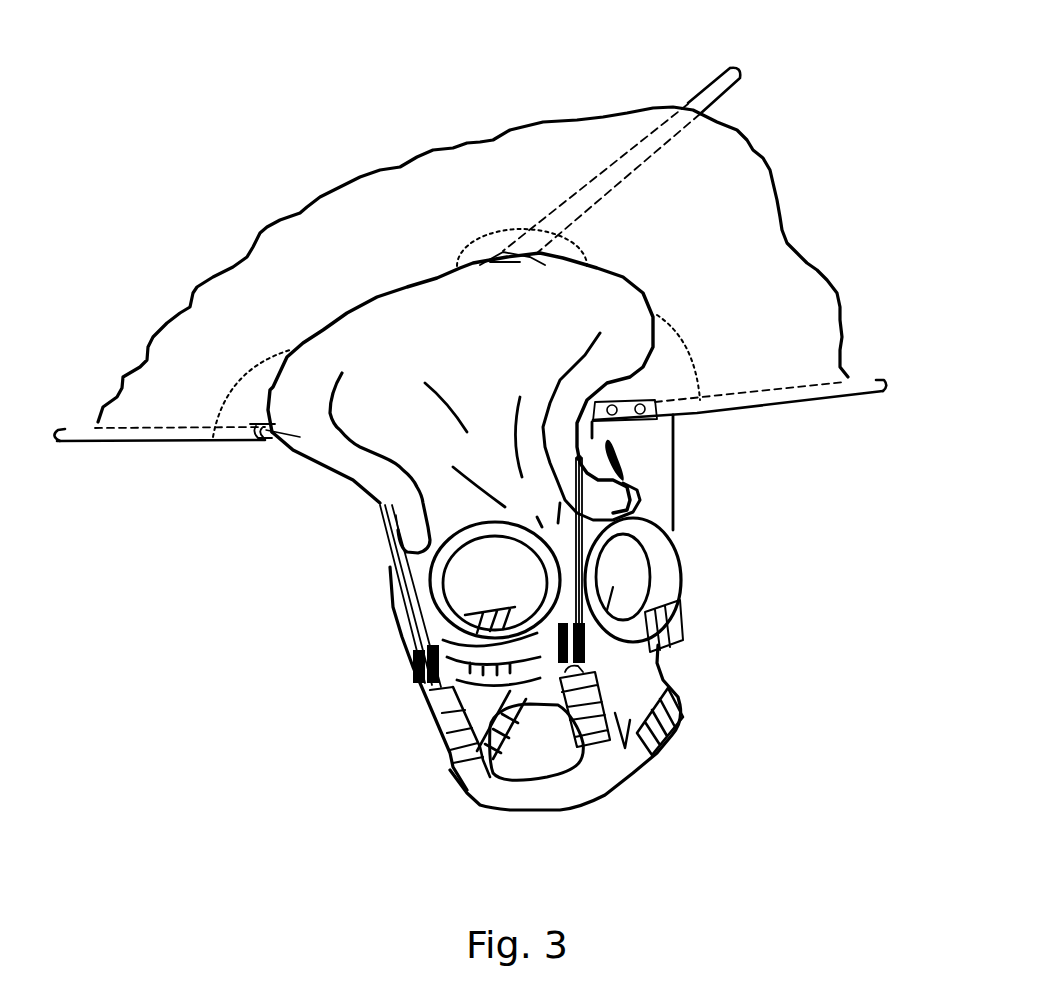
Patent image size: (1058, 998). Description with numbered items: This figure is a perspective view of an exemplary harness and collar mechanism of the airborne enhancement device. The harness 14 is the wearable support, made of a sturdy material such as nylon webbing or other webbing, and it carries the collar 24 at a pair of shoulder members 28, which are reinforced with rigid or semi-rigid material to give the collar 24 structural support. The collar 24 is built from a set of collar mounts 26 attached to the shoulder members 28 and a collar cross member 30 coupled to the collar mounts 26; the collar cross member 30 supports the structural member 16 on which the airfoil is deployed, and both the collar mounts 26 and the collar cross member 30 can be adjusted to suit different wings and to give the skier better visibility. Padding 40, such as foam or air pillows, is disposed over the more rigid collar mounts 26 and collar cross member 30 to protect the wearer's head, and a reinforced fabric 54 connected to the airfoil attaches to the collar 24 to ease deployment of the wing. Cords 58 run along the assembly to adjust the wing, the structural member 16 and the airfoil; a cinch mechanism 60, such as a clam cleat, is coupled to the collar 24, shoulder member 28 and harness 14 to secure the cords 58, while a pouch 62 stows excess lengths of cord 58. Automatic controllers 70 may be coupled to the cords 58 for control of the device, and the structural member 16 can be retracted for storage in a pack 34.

The harness 14 is at (452, 732).
The structural member 16 is at (865, 377).
The collar 24 is at (295, 450).
The collar mounts 26 is at (400, 513).
The shoulder members 28 is at (667, 573).
The collar cross member 30 is at (323, 327).
The pack 34 is at (660, 458).
The padding 40 is at (622, 305).
The reinforced fabric 54 is at (500, 242).
The cords 58 is at (390, 549).
The cinch mechanism 60 is at (413, 671).
The pouch 62 is at (497, 690).
The automatic controllers 70 is at (585, 673).